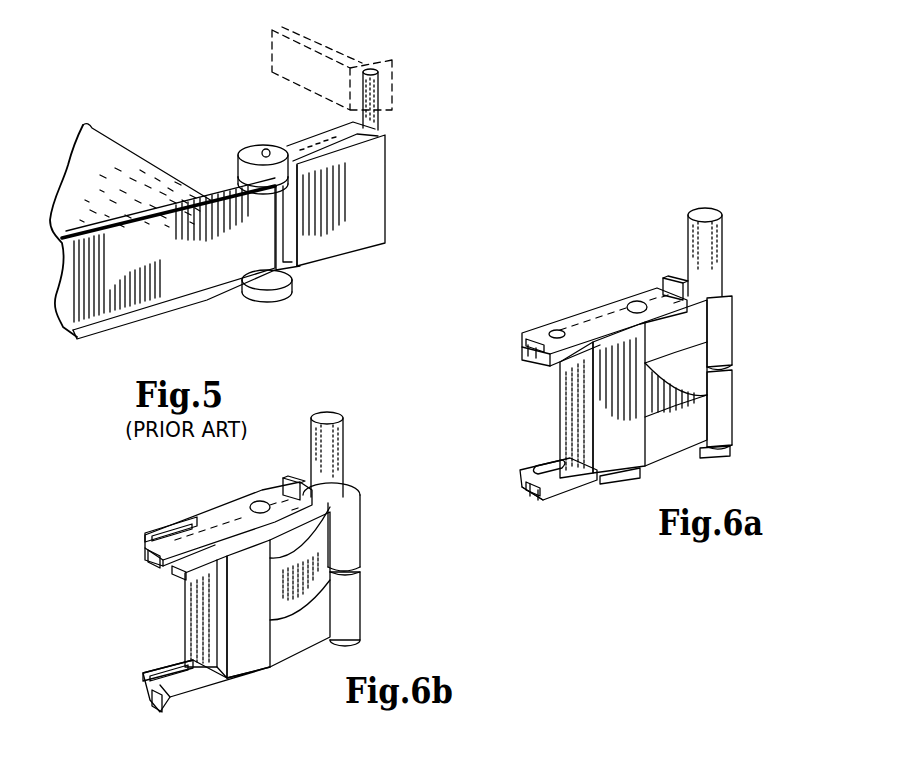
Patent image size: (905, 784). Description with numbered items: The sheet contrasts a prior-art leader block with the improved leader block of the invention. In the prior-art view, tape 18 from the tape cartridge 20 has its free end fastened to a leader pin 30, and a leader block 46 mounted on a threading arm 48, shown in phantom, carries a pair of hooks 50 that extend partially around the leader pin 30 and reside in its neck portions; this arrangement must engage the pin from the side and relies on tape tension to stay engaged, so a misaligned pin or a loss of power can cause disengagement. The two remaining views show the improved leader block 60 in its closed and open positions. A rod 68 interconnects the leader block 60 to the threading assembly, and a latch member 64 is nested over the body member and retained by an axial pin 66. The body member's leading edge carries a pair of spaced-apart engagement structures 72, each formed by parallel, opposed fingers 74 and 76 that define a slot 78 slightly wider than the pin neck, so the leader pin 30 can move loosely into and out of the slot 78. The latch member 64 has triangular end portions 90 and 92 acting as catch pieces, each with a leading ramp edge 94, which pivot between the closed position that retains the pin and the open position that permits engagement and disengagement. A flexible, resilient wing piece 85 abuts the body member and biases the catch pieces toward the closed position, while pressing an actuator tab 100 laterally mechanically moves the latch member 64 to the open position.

In FIG. 5, the tape 18 is at (177, 263).
In FIG. 5, the tape cartridge 20 is at (110, 155).
In FIG. 5, the leader pin 30 is at (268, 150).
In FIG. 5, the leader block 46 is at (351, 200).
In FIG. 5, the threading arm 48 is at (327, 57).
In FIG. 5, the hooks 50 is at (237, 175).
In FIG. 6A, the leader block 60 is at (521, 251).
In FIG. 6B, the leader block 60 is at (408, 475).
In FIG. 6A, the latch member 64 is at (629, 450).
In FIG. 6B, the latch member 64 is at (262, 605).
In FIG. 6A, the axial pin 66 is at (636, 301).
In FIG. 6B, the axial pin 66 is at (258, 501).
In FIG. 6A, the rod 68 is at (726, 245).
In FIG. 6B, the rod 68 is at (346, 438).
In FIG. 6A, the engagement structures 72 is at (506, 353).
In FIG. 6B, the engagement structures 72 is at (228, 524).
In FIG. 6B, the finger 74 is at (170, 528).
In FIG. 6B, the finger 76 is at (197, 527).
In FIG. 6B, the slot 78 is at (133, 547).
In FIG. 6A, the wing piece 85 is at (682, 377).
In FIG. 6B, the wing piece 85 is at (327, 583).
In FIG. 6A, the triangular end portion 90 is at (549, 335).
In FIG. 6B, the triangular end portion 90 is at (180, 577).
In FIG. 6A, the triangular end portion 92 is at (560, 493).
In FIG. 6B, the triangular end portion 92 is at (193, 703).
In FIG. 6A, the leading ramp edge 94 is at (533, 335).
In FIG. 6B, the leading ramp edge 94 is at (157, 560).
In FIG. 6A, the actuator tab 100 is at (663, 277).
In FIG. 6B, the actuator tab 100 is at (283, 477).